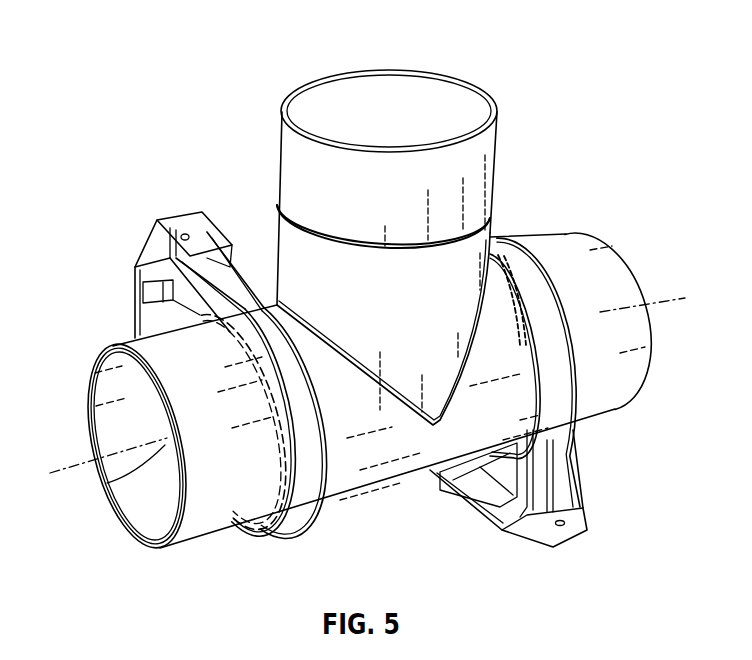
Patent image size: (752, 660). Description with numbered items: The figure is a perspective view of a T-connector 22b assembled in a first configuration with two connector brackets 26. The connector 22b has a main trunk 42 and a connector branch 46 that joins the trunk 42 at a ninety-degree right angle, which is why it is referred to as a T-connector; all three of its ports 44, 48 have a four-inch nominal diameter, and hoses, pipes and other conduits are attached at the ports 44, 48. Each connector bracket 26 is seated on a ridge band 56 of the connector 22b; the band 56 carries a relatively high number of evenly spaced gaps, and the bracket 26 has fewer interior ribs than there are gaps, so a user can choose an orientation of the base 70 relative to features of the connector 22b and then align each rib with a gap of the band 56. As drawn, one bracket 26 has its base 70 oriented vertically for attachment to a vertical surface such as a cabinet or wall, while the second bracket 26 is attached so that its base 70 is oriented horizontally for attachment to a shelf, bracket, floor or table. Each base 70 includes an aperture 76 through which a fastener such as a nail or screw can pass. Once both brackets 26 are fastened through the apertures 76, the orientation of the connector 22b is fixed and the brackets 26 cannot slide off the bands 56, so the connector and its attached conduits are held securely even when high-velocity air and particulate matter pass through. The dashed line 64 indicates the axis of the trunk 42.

The connector 22b is at (536, 78).
The connector bracket 26 is at (305, 505).
The main trunk 42 is at (378, 478).
The port 44 is at (107, 483).
The connector branch 46 is at (481, 175).
The port 48 is at (345, 70).
The band 56 is at (274, 430).
The pipe axis 64 is at (70, 462).
The base 70 is at (152, 270).
The aperture 76 is at (186, 216).